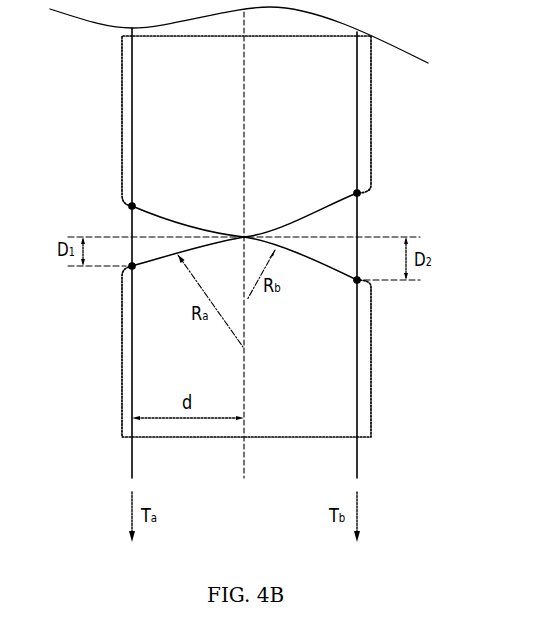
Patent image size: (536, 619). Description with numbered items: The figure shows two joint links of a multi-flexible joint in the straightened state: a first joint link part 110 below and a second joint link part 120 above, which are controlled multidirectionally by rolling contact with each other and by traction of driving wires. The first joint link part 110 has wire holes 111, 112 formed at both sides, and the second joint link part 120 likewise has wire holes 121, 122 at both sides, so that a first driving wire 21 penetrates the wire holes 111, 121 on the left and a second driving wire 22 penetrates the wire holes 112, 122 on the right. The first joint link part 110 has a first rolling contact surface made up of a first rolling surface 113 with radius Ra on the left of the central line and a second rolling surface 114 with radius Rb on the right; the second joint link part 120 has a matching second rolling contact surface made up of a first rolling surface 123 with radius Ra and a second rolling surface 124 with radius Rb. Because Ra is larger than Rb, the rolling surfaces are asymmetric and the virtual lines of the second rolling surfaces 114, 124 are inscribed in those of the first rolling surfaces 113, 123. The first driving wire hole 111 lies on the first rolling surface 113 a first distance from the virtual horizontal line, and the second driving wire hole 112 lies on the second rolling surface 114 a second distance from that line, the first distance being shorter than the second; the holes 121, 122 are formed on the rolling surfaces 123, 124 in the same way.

The first driving wire 21 is at (133, 90).
The second driving wire 22 is at (357, 89).
The first joint link part 110 is at (371, 362).
The second joint link part 120 is at (371, 110).
The first driving wire hole 111 is at (132, 266).
The second driving wire hole 112 is at (357, 280).
The first rolling surface 113 is at (153, 253).
The second rolling surface 114 is at (327, 264).
The first driving wire hole 121 is at (132, 206).
The second driving wire hole 122 is at (357, 193).
The first rolling surface 123 is at (160, 214).
The second rolling surface 124 is at (325, 205).